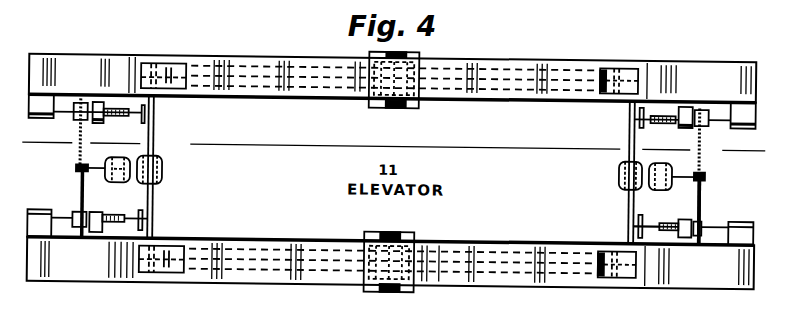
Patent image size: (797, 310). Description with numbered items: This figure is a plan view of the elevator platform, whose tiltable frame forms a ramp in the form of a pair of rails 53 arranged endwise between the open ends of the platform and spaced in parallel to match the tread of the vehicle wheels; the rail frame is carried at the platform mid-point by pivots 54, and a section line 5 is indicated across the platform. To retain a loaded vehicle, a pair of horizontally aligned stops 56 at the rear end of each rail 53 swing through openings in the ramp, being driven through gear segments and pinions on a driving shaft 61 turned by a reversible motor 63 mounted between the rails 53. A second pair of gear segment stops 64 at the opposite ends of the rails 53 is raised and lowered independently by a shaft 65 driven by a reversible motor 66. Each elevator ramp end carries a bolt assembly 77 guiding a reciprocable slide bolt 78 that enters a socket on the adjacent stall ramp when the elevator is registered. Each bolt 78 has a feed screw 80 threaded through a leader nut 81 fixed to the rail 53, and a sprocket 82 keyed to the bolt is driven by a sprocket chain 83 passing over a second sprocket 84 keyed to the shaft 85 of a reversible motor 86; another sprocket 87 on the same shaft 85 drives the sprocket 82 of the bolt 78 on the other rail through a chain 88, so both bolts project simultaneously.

The section line 5- 5 is at (392, 147).
The rails 53 is at (521, 94).
The pivots 54 is at (389, 232).
The stops 56 is at (628, 70).
The driving shaft 61 is at (635, 149).
The reversible motor 63 is at (619, 174).
The gear segment stops 64 is at (175, 76).
The shaft 65 is at (154, 147).
The reversible motor 66 is at (162, 174).
The bolt assembly 77 is at (36, 122).
The slide bolt 78 is at (72, 222).
The feed screw 80 is at (672, 235).
The leader nut 81 is at (104, 126).
The sprocket 82 is at (80, 238).
The sprocket chain 83 is at (83, 189).
The second sprocket 84 is at (705, 178).
The shaft 85 is at (706, 172).
The reversible motor 86 is at (392, 184).
The sprocket 87 is at (698, 170).
The chain 88 is at (78, 159).